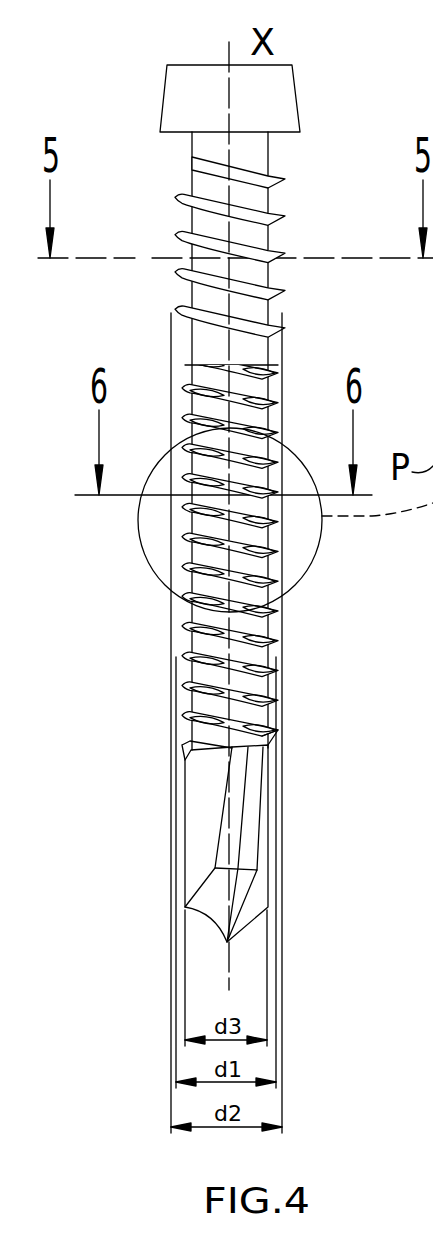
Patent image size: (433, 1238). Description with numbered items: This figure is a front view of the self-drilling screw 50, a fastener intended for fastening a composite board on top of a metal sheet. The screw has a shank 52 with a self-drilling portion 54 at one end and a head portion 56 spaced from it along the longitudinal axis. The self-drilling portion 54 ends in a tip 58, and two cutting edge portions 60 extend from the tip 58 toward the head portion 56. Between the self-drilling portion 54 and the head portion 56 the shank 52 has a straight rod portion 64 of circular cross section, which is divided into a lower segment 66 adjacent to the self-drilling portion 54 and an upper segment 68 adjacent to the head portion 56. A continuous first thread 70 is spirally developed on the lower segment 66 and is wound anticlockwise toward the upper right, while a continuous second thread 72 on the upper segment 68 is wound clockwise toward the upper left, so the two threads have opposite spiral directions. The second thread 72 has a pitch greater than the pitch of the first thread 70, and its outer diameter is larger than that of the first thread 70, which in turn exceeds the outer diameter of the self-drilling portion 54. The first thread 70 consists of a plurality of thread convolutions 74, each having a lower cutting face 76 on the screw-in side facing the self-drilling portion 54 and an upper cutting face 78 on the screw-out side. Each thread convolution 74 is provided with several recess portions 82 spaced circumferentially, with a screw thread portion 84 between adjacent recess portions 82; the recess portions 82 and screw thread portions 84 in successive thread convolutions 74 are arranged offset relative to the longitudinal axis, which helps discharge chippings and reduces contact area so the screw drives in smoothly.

The self-drilling screw 50 is at (150, 650).
The shank 52 is at (257, 307).
The self-drilling portion 54 is at (257, 888).
The head portion 56 is at (268, 90).
The tip 58 is at (227, 942).
The cutting edge portions 60 is at (202, 833).
The straight rod portion 64 is at (195, 633).
The lower segment 66 is at (188, 752).
The upper segment 68 is at (253, 193).
The first thread 70 is at (275, 643).
The second thread 72 is at (277, 288).
The thread convolutions 74 is at (270, 545).
The lower cutting face 76 is at (268, 735).
The upper cutting face 78 is at (195, 725).
The recess portions 82 is at (275, 527).
The screw thread portion 84 is at (276, 705).